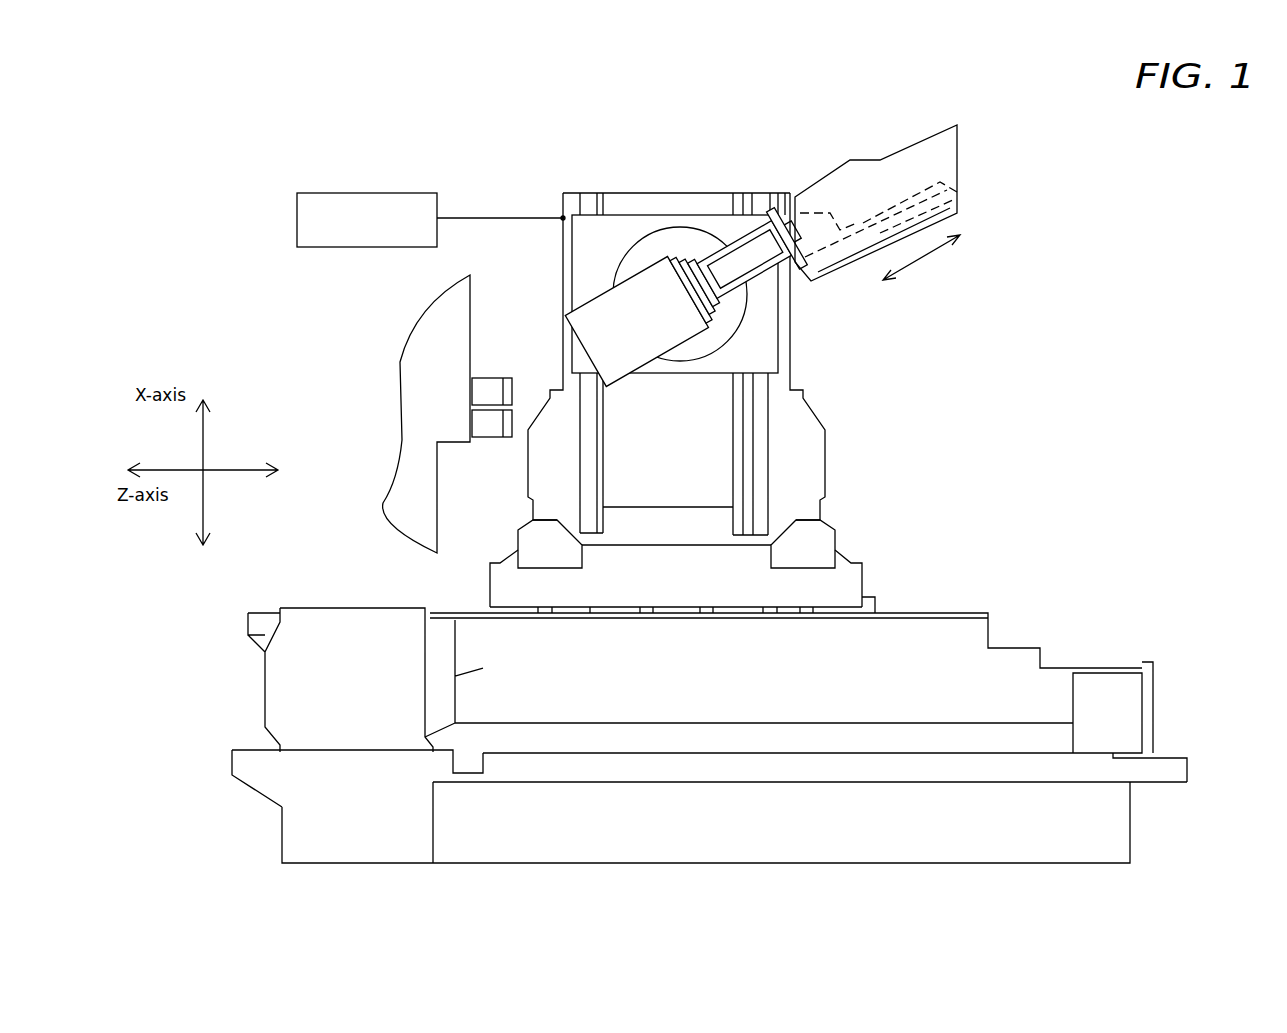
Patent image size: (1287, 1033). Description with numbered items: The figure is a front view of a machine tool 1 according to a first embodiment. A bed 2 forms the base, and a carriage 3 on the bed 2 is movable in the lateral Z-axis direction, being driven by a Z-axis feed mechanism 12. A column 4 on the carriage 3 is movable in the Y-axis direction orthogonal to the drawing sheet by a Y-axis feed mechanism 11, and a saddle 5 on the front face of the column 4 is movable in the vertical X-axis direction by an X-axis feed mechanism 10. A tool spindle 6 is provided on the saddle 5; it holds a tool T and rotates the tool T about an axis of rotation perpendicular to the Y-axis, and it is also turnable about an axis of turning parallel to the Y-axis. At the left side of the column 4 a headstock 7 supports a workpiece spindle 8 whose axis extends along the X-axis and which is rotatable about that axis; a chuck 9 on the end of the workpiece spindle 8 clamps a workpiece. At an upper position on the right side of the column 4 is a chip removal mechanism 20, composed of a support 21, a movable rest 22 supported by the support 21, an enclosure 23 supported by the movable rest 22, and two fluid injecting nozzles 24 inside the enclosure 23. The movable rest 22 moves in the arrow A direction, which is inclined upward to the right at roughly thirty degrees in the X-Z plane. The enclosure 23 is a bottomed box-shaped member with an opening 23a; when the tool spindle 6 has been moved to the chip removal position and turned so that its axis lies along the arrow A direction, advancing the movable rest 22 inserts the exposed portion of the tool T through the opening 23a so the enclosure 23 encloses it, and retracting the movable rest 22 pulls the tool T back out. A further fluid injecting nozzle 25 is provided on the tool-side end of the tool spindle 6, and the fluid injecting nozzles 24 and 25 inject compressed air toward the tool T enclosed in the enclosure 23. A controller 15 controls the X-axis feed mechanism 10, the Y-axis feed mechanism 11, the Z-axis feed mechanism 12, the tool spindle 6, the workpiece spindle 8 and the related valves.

The machine tool 1 is at (1060, 391).
The bed 2 is at (337, 608).
The carriage 3 is at (860, 578).
The column 4 is at (688, 193).
The saddle 5 is at (640, 216).
The tool spindle 6 is at (572, 322).
The headstock 7 is at (425, 318).
The workpiece spindle 8 is at (470, 388).
The chuck 9 is at (472, 418).
The X-axis feed mechanism 10 is at (606, 184).
The Y-axis feed mechanism 11 is at (843, 513).
The Z-axis feed mechanism 12 is at (1004, 611).
The controller 15 is at (366, 193).
The chip removal mechanism 20 is at (1045, 176).
The support 21 is at (957, 196).
The movable rest 22 is at (788, 198).
The enclosure 23 is at (767, 286).
The opening 23a is at (705, 294).
The fluid injecting nozzles 24 is at (778, 218).
The fluid injecting nozzle 25 is at (720, 291).
The tool T is at (795, 264).